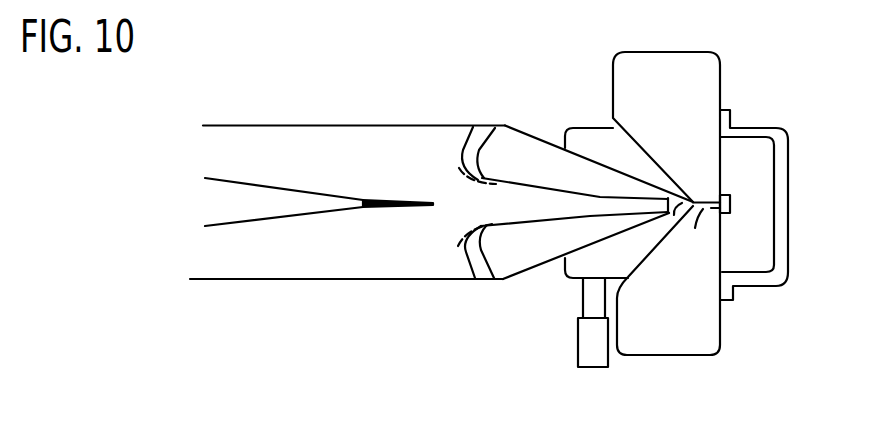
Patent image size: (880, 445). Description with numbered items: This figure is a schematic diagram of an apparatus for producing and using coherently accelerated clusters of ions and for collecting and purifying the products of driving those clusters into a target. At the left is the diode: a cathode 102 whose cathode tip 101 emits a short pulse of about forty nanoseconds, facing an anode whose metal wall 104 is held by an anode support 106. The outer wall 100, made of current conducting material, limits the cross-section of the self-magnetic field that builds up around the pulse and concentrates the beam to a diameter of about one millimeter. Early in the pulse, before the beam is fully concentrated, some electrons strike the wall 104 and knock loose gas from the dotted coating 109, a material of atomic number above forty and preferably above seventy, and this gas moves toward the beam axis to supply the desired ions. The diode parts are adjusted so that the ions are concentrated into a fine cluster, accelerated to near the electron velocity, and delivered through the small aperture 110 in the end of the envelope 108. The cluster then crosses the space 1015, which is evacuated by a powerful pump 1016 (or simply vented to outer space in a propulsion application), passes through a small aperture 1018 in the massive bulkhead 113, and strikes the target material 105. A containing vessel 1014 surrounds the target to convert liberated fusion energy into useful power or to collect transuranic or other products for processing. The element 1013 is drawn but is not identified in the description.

The outer wall 100 is at (410, 280).
The cathode tip 101 is at (401, 201).
The cathode 102 is at (282, 187).
The anode wall 104 is at (525, 184).
The target material 105 is at (712, 213).
The anode support 106 is at (468, 157).
The envelope 108 is at (540, 143).
The coating 109 is at (472, 179).
The aperture 110 is at (678, 192).
The bulkhead 113 is at (716, 253).
The lower housing block 1013 is at (633, 330).
The containing vessel 1014 is at (737, 290).
The space 1015 is at (566, 262).
The pump 1016 is at (578, 341).
The aperture 1018 is at (697, 208).